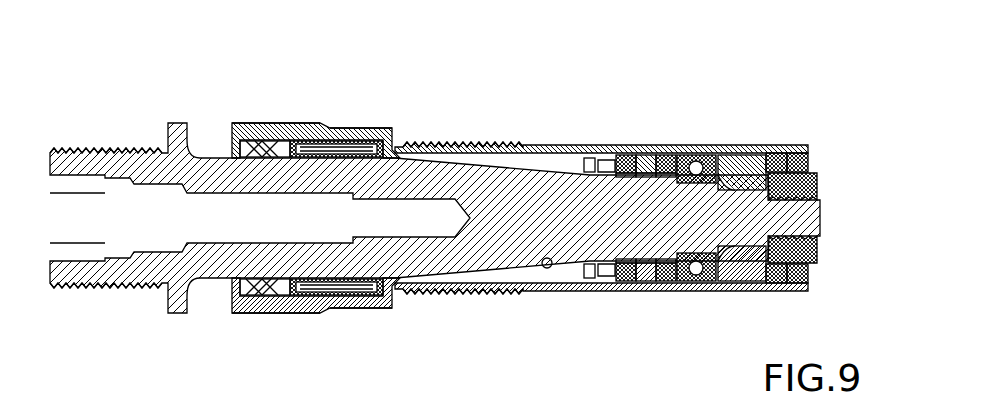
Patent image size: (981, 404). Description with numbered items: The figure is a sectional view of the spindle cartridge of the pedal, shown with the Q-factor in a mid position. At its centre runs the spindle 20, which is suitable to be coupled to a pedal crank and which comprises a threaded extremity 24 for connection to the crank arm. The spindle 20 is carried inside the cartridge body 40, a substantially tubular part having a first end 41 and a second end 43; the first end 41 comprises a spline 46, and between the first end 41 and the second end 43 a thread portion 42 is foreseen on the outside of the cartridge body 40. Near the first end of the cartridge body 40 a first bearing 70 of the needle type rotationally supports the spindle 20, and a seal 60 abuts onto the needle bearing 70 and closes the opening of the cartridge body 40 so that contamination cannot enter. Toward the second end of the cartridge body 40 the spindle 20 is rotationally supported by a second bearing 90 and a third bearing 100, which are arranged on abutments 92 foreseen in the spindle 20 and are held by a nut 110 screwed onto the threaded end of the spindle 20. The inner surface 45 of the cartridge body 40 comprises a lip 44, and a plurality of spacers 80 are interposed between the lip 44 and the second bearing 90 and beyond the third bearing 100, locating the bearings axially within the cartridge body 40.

The spindle 20 is at (325, 314).
The threaded extremity 24 is at (110, 290).
The cartridge body 40 is at (567, 145).
The first end 41 is at (778, 150).
The thread portion 42 is at (455, 142).
The second end 43 is at (362, 128).
The lip 44 is at (608, 155).
The inner surface 45 is at (545, 275).
The spline 46 is at (272, 122).
The seal 60 is at (250, 310).
The first bearing 70 is at (378, 320).
The spacers 80 is at (663, 295).
The second bearing 90 is at (693, 293).
The abutments 92 is at (732, 155).
The third bearing 100 is at (733, 293).
The nut 110 is at (820, 186).